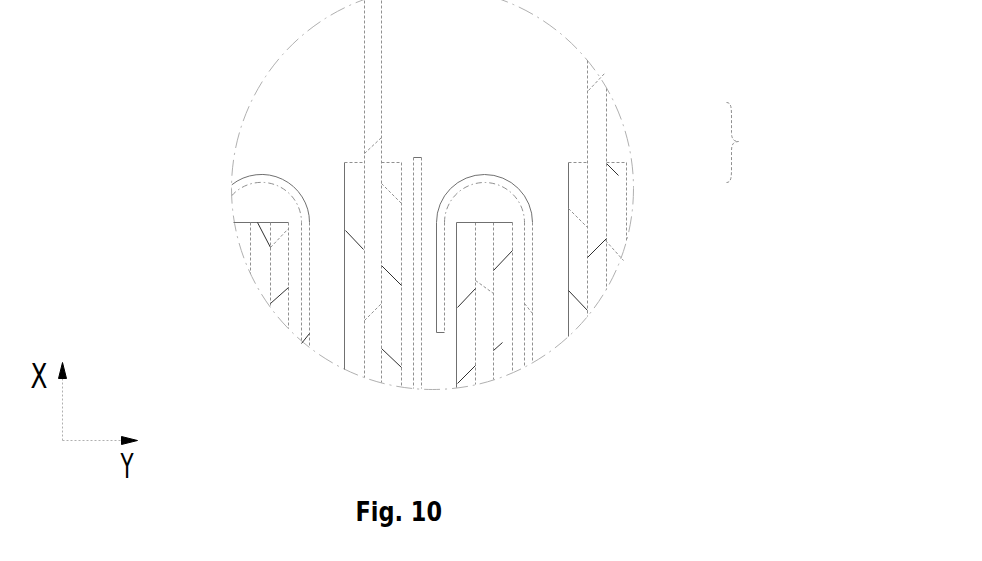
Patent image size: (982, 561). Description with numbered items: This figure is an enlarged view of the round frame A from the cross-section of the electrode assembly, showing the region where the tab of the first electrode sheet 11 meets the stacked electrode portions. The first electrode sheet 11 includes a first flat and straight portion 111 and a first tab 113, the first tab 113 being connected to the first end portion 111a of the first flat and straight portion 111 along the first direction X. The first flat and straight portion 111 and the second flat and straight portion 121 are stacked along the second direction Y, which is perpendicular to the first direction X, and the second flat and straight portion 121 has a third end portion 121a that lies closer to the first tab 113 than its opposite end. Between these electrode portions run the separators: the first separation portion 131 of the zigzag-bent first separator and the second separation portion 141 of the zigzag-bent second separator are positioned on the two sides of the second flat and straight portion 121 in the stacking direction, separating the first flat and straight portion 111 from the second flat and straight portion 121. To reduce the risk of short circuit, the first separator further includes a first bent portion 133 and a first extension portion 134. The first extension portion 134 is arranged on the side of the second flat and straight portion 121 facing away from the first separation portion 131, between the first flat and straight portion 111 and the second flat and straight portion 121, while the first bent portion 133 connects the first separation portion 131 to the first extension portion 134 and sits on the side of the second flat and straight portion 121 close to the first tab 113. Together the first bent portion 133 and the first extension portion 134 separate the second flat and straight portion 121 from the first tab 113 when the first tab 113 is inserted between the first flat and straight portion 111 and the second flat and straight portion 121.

The first electrode sheet 11 is at (748, 143).
The first flat and straight portion 111 is at (343, 167).
The first end portion 111a is at (353, 157).
The first tab 113 is at (375, 78).
The second flat and straight portion 121 is at (486, 362).
The third end portion 121a is at (475, 220).
The first separation portion 131 is at (534, 284).
The first bent portion 133 is at (526, 203).
The first extension portion 134 is at (435, 242).
The second separation portion 141 is at (415, 345).